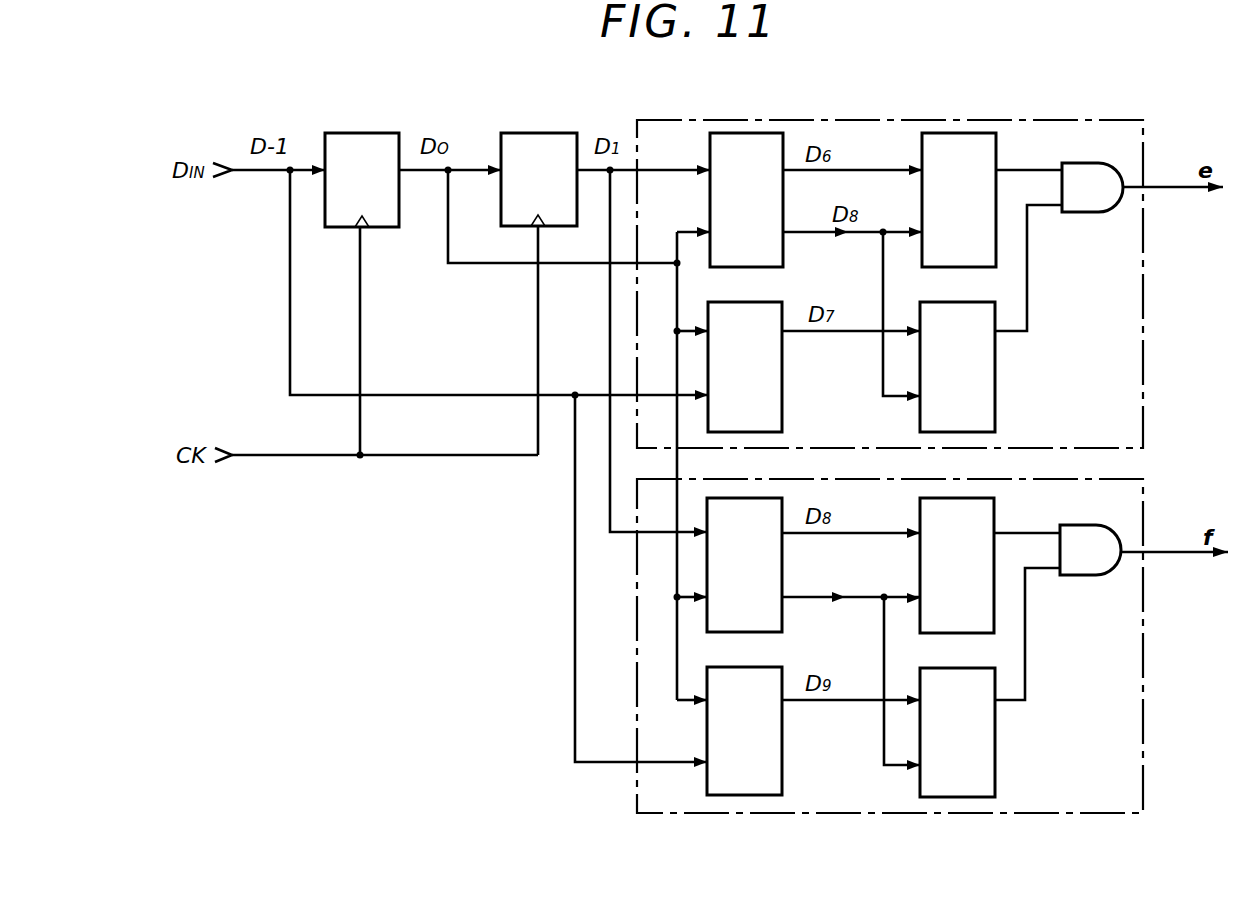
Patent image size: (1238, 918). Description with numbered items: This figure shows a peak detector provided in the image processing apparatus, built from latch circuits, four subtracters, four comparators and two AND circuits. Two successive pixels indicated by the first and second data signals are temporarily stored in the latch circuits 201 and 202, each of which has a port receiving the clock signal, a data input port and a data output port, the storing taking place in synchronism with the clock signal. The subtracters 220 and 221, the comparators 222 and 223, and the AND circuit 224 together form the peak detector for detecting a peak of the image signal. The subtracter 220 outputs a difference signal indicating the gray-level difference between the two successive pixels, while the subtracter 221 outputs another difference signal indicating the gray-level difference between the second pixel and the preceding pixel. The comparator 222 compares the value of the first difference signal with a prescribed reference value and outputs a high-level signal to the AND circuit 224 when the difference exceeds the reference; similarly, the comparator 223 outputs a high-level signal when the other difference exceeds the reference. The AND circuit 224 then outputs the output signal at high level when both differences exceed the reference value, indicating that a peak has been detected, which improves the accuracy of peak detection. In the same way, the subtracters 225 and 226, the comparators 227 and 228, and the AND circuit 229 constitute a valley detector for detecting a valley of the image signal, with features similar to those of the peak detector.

The latch circuit 201 is at (342, 133).
The latch circuit 202 is at (524, 133).
The subtracter 220 is at (783, 246).
The subtracter 221 is at (782, 378).
The comparator 222 is at (945, 133).
The comparator 223 is at (995, 393).
The AND circuit 224 is at (1084, 212).
The subtracter 225 is at (782, 576).
The subtracter 226 is at (782, 760).
The comparator 227 is at (994, 512).
The comparator 228 is at (995, 758).
The AND circuit 229 is at (1082, 575).